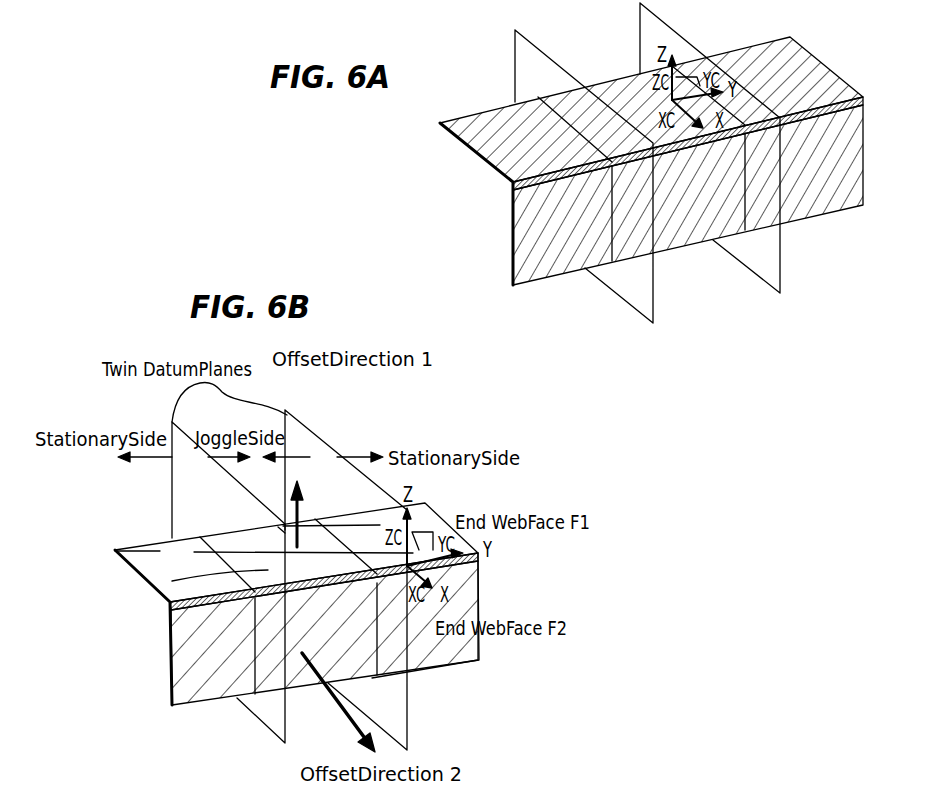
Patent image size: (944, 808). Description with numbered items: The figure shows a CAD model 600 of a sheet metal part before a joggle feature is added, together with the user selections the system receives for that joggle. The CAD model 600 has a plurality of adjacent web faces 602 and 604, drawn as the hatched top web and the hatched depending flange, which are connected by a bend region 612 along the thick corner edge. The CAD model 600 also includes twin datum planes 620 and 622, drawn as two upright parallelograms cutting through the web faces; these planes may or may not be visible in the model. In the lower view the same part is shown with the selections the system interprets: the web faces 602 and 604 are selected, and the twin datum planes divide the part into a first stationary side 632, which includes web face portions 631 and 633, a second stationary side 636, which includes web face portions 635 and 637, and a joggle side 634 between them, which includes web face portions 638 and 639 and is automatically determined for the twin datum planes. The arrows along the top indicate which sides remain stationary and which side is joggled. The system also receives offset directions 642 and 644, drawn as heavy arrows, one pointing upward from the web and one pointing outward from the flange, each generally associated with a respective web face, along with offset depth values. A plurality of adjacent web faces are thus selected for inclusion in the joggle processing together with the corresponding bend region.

In FIG. 6A, the CAD model 600 is at (492, 50).
In FIG. 6B, the CAD model 600 is at (114, 416).
In FIG. 6A, the web face 602 is at (497, 110).
In FIG. 6B, the web face 602 is at (132, 552).
In FIG. 6A, the web face 604 is at (537, 270).
In FIG. 6B, the web face 604 is at (205, 697).
In FIG. 6A, the bend region 612 is at (512, 192).
In FIG. 6A, the twin datum plane 620 is at (632, 295).
In FIG. 6A, the twin datum plane 622 is at (760, 268).
In FIG. 6B, the web face portion 631 is at (190, 568).
In FIG. 6B, the stationary side 632 is at (152, 460).
In FIG. 6B, the web face portion 633 is at (180, 647).
In FIG. 6B, the joggle side 634 is at (297, 457).
In FIG. 6B, the web face portion 635 is at (430, 520).
In FIG. 6B, the stationary side 636 is at (347, 450).
In FIG. 6B, the web face portion 637 is at (458, 658).
In FIG. 6B, the web face portion 638 is at (168, 587).
In FIG. 6B, the web face portion 639 is at (340, 636).
In FIG. 6B, the offset direction 642 is at (308, 508).
In FIG. 6B, the offset direction 644 is at (352, 723).